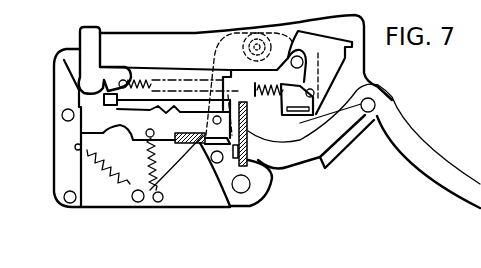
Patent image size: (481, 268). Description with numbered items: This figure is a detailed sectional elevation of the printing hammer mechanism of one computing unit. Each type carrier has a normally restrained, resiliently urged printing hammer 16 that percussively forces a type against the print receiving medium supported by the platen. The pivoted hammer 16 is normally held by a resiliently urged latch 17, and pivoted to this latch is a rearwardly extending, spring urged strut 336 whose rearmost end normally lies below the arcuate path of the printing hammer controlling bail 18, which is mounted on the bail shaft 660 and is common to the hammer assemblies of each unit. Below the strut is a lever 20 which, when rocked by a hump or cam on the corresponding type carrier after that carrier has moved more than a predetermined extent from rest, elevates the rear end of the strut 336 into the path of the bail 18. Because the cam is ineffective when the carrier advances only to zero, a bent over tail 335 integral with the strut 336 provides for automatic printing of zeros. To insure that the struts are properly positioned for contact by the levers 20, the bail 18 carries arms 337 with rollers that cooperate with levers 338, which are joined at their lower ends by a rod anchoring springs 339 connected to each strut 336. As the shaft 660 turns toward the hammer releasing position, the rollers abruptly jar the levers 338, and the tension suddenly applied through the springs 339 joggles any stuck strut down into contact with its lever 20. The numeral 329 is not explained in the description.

The printing hammer 16 is at (169, 80).
The latch 17 is at (223, 111).
The printing hammer controlling bail 18 is at (367, 80).
The lever 20 is at (408, 147).
The latch knob 329 is at (128, 66).
The bent over tail 335 is at (222, 178).
The strut 336 is at (100, 120).
The arm 337 is at (278, 50).
The lever 338 is at (190, 190).
The spring 339 is at (148, 182).
The bail shaft 660 is at (296, 56).